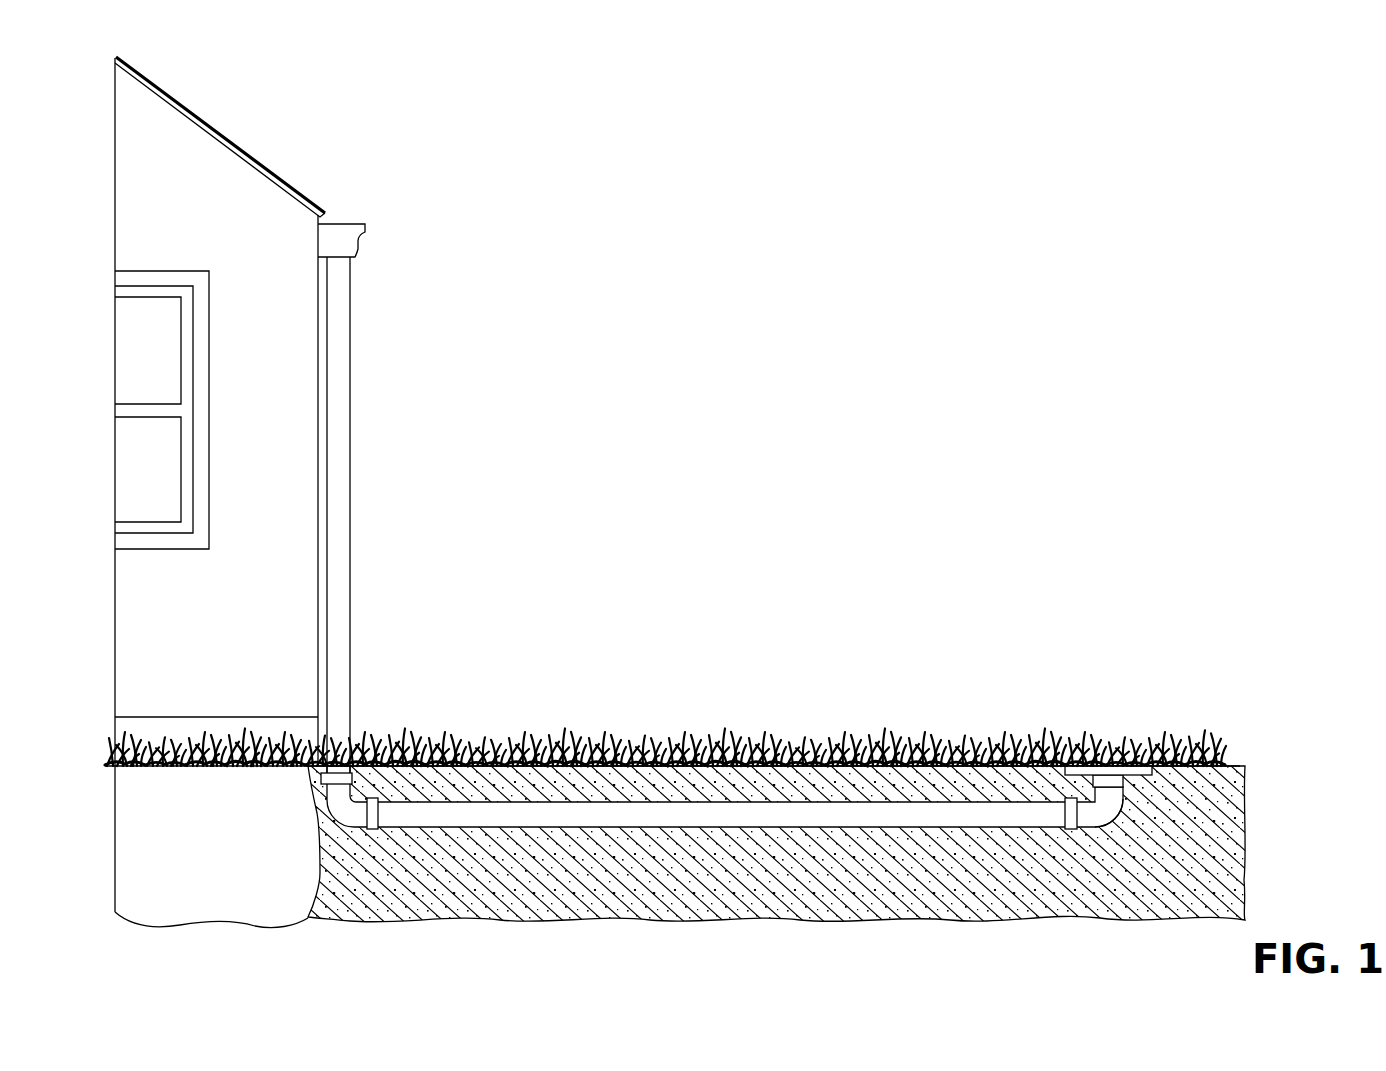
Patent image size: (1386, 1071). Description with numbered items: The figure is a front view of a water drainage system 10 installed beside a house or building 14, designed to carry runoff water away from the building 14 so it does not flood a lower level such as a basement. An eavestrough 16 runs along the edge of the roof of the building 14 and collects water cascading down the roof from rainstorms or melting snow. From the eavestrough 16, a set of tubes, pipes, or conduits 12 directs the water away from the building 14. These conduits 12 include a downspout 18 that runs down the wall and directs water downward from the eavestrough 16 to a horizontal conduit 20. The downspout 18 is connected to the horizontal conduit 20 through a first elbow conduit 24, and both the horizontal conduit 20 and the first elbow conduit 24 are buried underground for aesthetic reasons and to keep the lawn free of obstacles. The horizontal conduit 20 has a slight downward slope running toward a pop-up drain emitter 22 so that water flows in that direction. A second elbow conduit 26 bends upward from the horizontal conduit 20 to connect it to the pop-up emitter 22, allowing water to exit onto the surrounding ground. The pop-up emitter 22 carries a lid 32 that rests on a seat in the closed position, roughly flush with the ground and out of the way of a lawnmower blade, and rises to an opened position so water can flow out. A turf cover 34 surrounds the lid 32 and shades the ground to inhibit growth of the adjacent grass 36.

The water drainage system 10 is at (841, 553).
The conduits 12 is at (350, 633).
The building 14 is at (215, 145).
The eavestrough 16 is at (367, 240).
The downspout 18 is at (350, 483).
The horizontal conduit 20 is at (700, 818).
The pop-up drain emitter 22 is at (1136, 762).
The first elbow conduit 24 is at (356, 790).
The second elbow conduit 26 is at (1103, 813).
The lid 32 is at (1108, 763).
The turf cover 34 is at (1081, 768).
The grass 36 is at (645, 748).